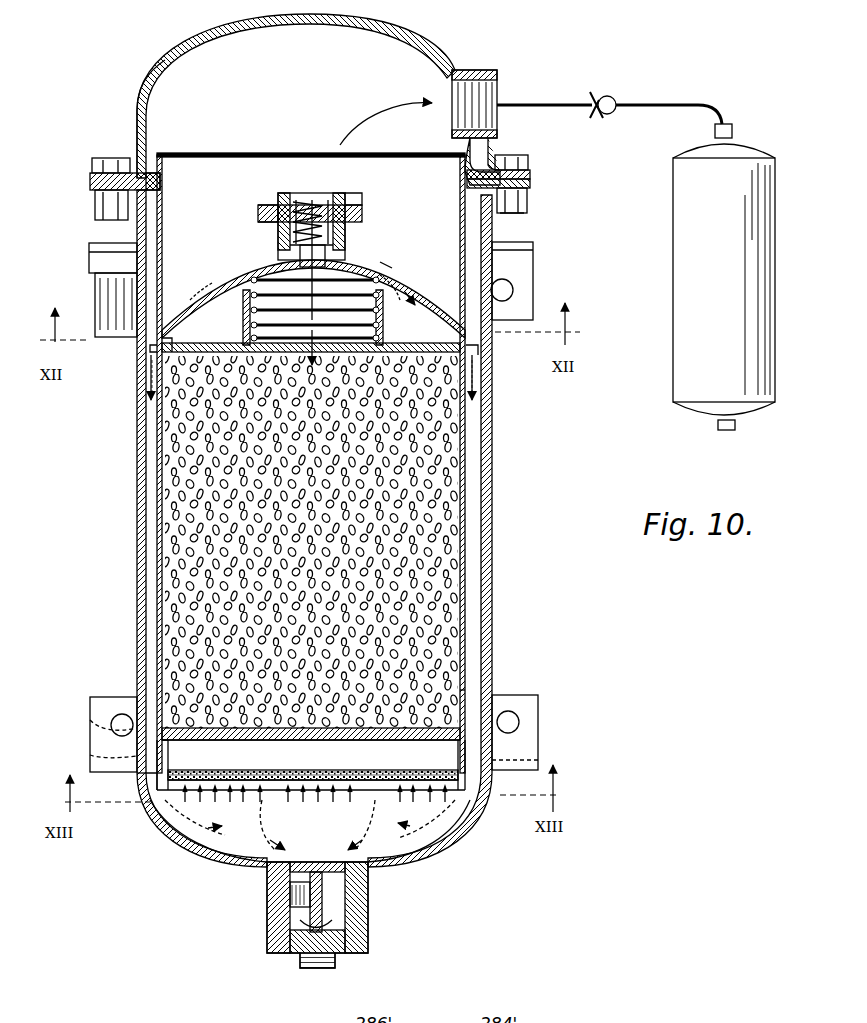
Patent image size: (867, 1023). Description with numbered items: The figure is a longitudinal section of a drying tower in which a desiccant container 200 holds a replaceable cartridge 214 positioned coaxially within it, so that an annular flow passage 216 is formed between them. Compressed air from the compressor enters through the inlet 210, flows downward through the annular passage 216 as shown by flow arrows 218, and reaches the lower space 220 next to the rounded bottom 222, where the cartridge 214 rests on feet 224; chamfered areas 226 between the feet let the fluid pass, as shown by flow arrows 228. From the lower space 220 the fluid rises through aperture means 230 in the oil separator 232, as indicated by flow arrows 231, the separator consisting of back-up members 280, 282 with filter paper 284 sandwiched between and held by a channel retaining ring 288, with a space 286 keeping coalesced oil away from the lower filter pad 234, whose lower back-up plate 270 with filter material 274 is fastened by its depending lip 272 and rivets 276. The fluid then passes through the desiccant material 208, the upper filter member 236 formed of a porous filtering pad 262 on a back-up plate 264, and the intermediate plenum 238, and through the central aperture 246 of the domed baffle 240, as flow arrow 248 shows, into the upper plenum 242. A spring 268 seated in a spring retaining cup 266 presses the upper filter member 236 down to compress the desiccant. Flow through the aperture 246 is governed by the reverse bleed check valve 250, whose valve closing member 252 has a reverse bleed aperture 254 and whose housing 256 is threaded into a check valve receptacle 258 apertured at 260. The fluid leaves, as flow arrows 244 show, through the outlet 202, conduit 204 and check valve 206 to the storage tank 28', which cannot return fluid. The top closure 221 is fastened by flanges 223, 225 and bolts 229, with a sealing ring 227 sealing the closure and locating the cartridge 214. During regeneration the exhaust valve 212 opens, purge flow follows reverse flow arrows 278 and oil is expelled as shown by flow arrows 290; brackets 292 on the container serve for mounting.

The storage tank 28' is at (725, 272).
The desiccant container 200 is at (505, 462).
The outlet 202 is at (478, 72).
The conduit 204 is at (534, 103).
The check valve 206 is at (615, 97).
The desiccant material 208 is at (498, 500).
The inlet 210 is at (95, 275).
The exhaust valve 212 is at (370, 900).
The cartridge 214 is at (493, 522).
The annular flow passage 216 is at (150, 440).
The flow arrows 218 is at (150, 370).
The lower space 220 is at (440, 835).
The top closure 221 is at (232, 40).
The rounded bottom 222 is at (230, 860).
The flange 223 is at (530, 172).
The feet 224 is at (165, 822).
The flange 225 is at (530, 185).
The chamfered areas 226 is at (153, 798).
The sealing ring 227 is at (458, 170).
The flow arrows 228 is at (408, 822).
The bolts 229 is at (515, 157).
The aperture means 230 is at (311, 765).
The flow arrows 231 is at (317, 825).
The oil separator 232 is at (265, 768).
The lower filter pad 234 is at (452, 705).
The upper filter member 236 is at (486, 355).
The intermediate plenum 238 is at (420, 288).
The domed baffle 240 is at (388, 262).
The upper plenum 242 is at (185, 80).
The flow arrows 244 is at (396, 100).
The central aperture 246 is at (275, 250).
The flow arrow 248 is at (311, 335).
The reverse bleed check valve 250 is at (430, 224).
The valve closing member 252 is at (303, 200).
The reverse bleed aperture 254 is at (317, 200).
The housing 256 is at (372, 192).
The check valve receptacle 258 is at (262, 214).
The aperture 260 is at (262, 280).
The porous filtering pad 262 is at (150, 350).
The back-up plate 264 is at (188, 343).
The spring retaining cup 266 is at (205, 300).
The spring 268 is at (200, 275).
The lower back-up plate 270 is at (265, 735).
The depending lip 272 is at (184, 765).
The filter material 274 is at (230, 728).
The rivets 276 is at (92, 724).
The reverse flow arrows 278 is at (235, 312).
The back-up member 280 is at (313, 764).
The back-up member 282 is at (313, 760).
The filter paper 284 is at (313, 762).
The space 286 is at (92, 748).
The channel retaining ring 288 is at (492, 775).
The flow arrows 290 is at (316, 838).
The brackets 292 is at (92, 250).